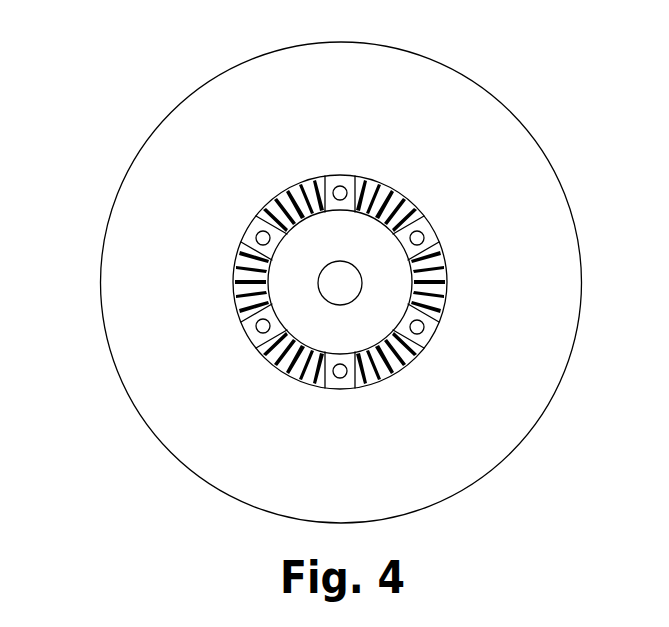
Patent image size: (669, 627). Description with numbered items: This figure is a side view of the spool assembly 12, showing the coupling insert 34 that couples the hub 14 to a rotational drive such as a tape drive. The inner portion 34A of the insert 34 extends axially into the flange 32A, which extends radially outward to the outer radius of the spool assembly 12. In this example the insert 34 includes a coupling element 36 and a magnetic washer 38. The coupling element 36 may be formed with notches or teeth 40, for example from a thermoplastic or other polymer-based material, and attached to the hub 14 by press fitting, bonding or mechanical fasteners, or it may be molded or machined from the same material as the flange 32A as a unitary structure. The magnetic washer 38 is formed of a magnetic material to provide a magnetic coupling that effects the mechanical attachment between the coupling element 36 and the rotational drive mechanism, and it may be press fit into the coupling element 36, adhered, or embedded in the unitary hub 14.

The spool assembly 12 is at (113, 77).
The hub 14 is at (122, 240).
The flange 32A is at (208, 197).
The coupling insert 34 is at (442, 332).
The inner portion of insert 34A is at (348, 272).
The coupling element 36 is at (442, 227).
The magnetic washer 38 is at (378, 242).
The notches or teeth 40 is at (233, 297).